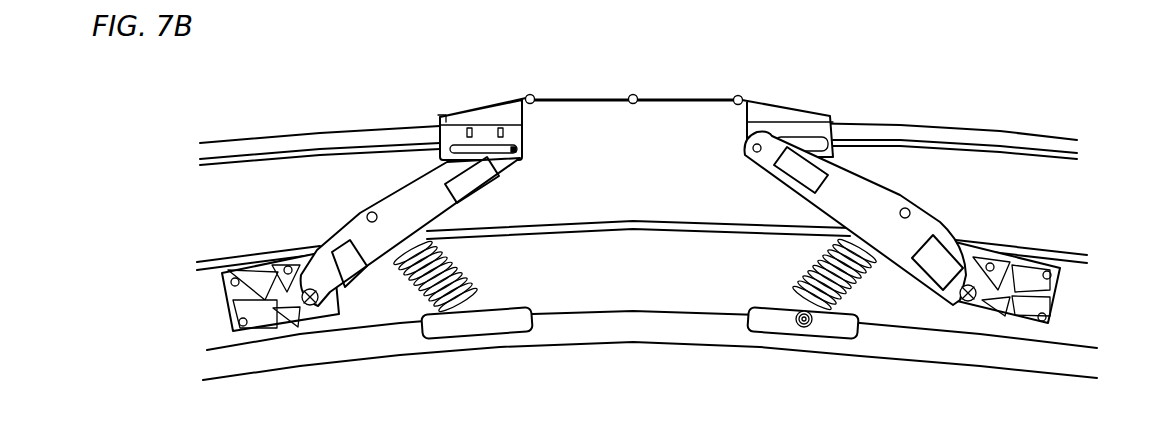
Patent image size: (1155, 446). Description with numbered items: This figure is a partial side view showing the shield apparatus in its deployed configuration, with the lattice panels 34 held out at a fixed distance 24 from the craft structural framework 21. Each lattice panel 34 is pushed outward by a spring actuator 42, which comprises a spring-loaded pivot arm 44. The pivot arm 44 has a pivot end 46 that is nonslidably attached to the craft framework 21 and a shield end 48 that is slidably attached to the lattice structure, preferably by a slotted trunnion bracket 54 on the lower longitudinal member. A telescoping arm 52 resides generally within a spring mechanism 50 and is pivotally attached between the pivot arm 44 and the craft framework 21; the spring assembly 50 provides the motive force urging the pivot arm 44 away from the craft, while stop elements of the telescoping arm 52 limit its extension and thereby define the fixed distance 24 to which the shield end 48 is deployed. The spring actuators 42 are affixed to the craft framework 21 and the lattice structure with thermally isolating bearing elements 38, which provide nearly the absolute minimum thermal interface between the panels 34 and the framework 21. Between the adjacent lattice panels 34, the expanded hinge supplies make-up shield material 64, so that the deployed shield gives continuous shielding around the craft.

The craft structural framework 21 is at (600, 343).
The fixed distance 24 is at (222, 167).
The lattice panel 34 is at (364, 126).
The thermally isolating bearing element 38 is at (527, 141).
The spring actuator 42 is at (372, 208).
The pivot arm 44 is at (845, 196).
The pivot end 46 is at (312, 262).
The shield end 48 is at (770, 150).
The spring mechanism 50 is at (445, 257).
The telescoping arm 52 is at (490, 308).
The slotted trunnion bracket 54 is at (452, 136).
The make-up shield material 64 is at (673, 101).